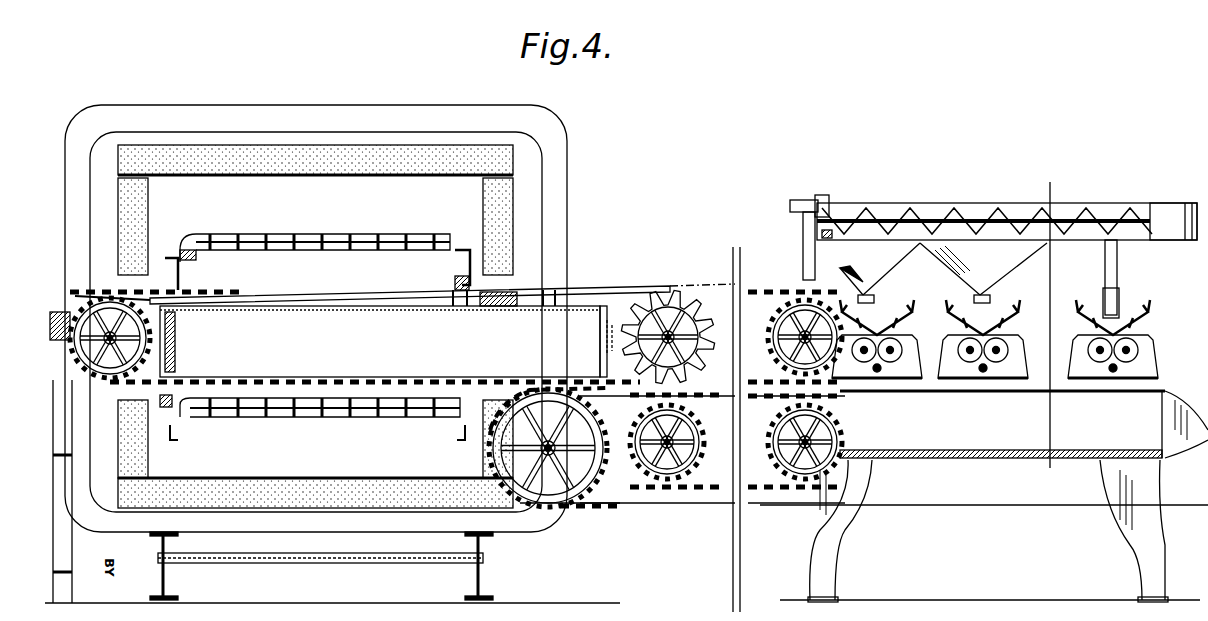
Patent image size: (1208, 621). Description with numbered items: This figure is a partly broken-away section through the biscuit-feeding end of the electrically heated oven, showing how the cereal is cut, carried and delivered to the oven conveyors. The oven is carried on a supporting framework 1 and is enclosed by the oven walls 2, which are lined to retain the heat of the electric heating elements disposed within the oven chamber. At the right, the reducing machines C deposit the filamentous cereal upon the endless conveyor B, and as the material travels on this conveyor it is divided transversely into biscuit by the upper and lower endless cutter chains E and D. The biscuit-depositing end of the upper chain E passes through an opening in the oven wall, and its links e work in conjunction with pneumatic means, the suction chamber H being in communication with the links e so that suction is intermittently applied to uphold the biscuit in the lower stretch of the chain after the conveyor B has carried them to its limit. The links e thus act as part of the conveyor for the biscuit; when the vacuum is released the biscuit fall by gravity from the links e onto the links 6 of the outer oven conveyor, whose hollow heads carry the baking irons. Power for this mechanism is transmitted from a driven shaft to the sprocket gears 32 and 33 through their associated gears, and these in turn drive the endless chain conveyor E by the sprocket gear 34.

The supporting framework 1 is at (481, 578).
The oven walls 2 is at (315, 326).
The links of the outer oven conveyor 6 is at (312, 233).
The sprocket gear 32 is at (838, 466).
The sprocket gear 33 is at (590, 508).
The sprocket gear 34 is at (690, 296).
The endless conveyor B is at (620, 518).
The reducing machines C is at (930, 345).
The lower endless cutter chain D is at (700, 400).
The upper endless cutter chain E is at (235, 292).
The links of the chain E e is at (125, 380).
The pneumatic or suction chamber H is at (383, 326).